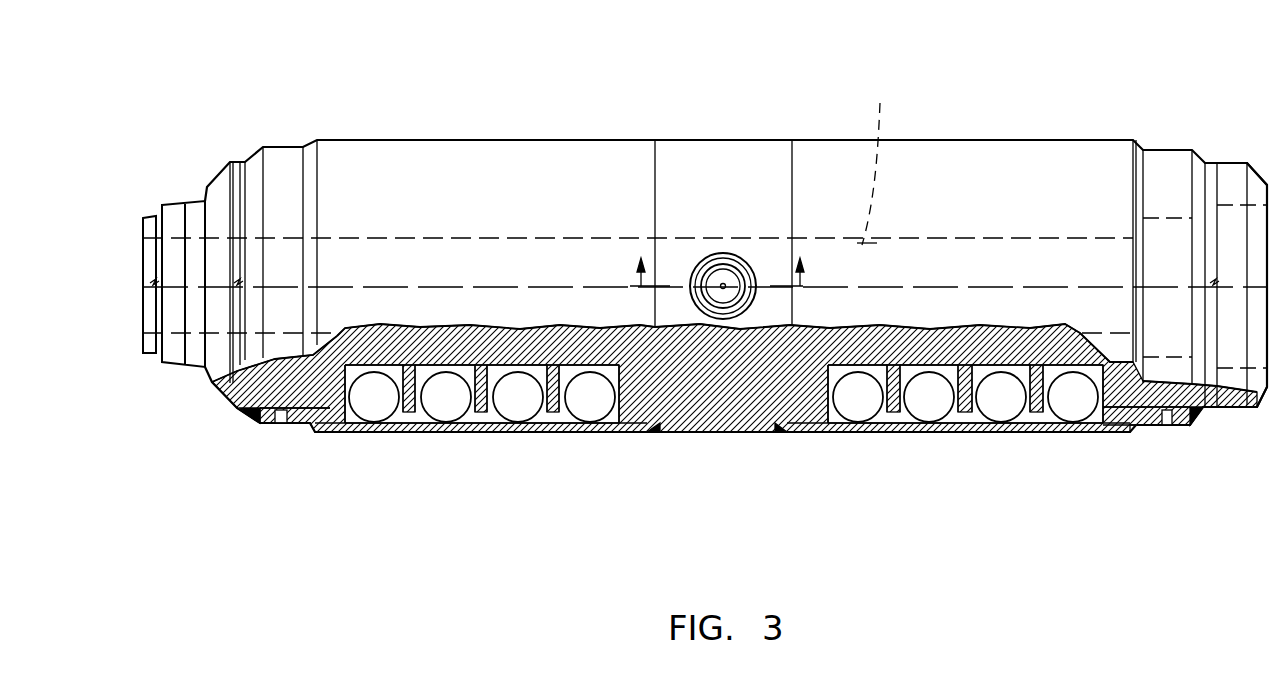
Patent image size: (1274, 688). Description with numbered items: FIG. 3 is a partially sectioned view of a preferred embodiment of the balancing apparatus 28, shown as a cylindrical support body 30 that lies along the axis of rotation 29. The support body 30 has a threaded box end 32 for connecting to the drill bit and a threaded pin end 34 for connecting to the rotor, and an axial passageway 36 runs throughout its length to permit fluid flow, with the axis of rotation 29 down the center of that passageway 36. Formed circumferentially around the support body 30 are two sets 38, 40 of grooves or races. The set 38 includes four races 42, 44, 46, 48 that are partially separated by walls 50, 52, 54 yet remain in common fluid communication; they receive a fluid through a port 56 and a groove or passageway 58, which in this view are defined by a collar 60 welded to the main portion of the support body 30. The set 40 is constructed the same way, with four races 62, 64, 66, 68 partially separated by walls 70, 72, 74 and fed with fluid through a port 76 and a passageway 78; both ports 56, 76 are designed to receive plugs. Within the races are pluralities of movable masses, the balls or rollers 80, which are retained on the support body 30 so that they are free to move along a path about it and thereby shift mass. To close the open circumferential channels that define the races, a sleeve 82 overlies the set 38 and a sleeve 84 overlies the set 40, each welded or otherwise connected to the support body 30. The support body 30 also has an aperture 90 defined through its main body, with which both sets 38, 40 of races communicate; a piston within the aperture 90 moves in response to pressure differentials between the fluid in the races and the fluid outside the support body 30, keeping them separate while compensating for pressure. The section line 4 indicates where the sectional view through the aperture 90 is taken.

The section line 4- 4 is at (718, 261).
The balancing apparatus 28 is at (1053, 78).
The axis of rotation 29 is at (829, 287).
The cylindrical support body 30 is at (1025, 157).
The threaded box end 32 is at (1230, 160).
The threaded pin end 34 is at (160, 200).
The axial passageway 36 is at (878, 161).
The set of races 38 is at (467, 418).
The set of races 40 is at (904, 418).
The race 42 is at (397, 365).
The race 44 is at (463, 365).
The race 46 is at (538, 365).
The race 48 is at (608, 367).
The wall 50 is at (408, 412).
The wall 52 is at (480, 412).
The wall 54 is at (553, 412).
The port 56 is at (282, 423).
The passageway 58 is at (327, 432).
The collar 60 is at (268, 423).
The race 62 is at (873, 370).
The race 64 is at (945, 372).
The race 66 is at (1027, 372).
The race 68 is at (1100, 372).
The wall 70 is at (891, 412).
The wall 72 is at (963, 412).
The wall 74 is at (1036, 412).
The port 76 is at (1165, 425).
The passageway 78 is at (1150, 425).
The balls or rollers 80 is at (374, 418).
The sleeve 82 is at (625, 432).
The sleeve 84 is at (1117, 425).
The aperture 90 is at (723, 268).